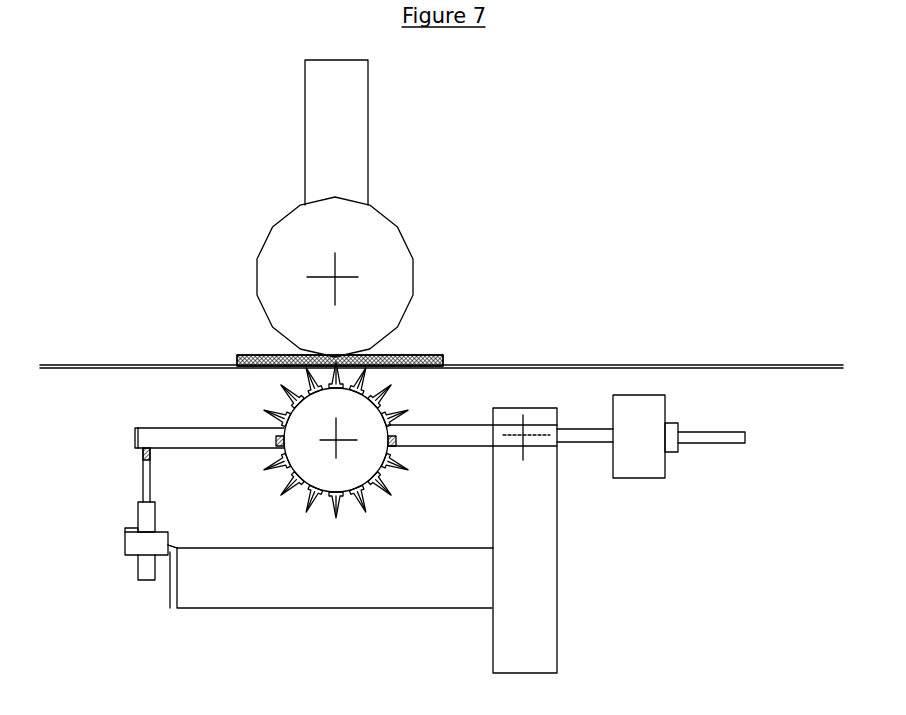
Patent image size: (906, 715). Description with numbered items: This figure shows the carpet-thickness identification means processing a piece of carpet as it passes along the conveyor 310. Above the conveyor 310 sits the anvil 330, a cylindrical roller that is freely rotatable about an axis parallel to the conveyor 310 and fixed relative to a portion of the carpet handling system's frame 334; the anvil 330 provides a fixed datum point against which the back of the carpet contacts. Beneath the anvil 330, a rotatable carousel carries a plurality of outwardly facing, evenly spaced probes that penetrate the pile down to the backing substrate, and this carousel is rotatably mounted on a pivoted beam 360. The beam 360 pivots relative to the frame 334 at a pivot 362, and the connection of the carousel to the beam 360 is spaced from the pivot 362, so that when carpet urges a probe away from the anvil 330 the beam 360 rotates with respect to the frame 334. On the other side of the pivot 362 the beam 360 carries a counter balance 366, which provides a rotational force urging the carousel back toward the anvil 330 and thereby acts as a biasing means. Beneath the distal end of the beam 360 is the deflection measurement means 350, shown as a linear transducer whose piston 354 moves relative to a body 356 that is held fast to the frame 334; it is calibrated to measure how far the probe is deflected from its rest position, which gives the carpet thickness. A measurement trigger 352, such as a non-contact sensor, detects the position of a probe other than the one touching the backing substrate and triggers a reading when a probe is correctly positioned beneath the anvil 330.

The conveyor 310 is at (595, 366).
The anvil 330 is at (348, 237).
The frame 334 is at (347, 587).
The deflection measurement means 350 is at (138, 486).
The measurement trigger 352 is at (258, 468).
The piston 354 is at (143, 475).
The body 356 is at (147, 538).
The pivoted beam 360 is at (424, 432).
The pivot 362 is at (523, 435).
The counter balance 366 is at (650, 412).